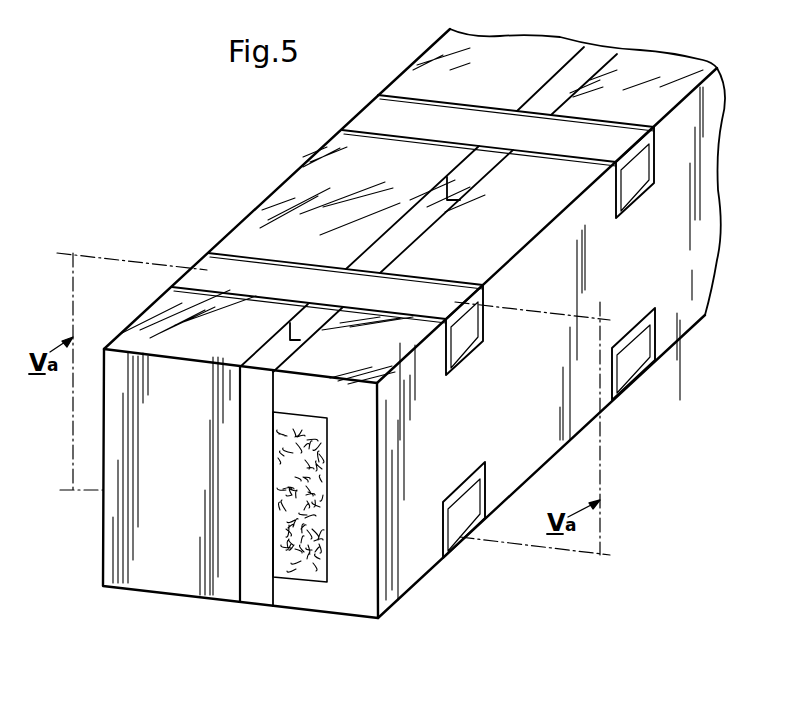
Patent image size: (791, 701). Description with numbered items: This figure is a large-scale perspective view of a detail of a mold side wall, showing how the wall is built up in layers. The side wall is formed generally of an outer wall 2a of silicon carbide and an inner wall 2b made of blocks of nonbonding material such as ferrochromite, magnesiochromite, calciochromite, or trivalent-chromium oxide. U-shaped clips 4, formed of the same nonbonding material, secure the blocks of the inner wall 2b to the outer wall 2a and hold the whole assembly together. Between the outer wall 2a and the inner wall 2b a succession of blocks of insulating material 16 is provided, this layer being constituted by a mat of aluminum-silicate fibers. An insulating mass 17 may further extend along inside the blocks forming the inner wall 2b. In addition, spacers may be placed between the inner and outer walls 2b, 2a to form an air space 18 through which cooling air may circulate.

The outer wall 2a is at (143, 581).
The inner wall 2b is at (350, 597).
The U-shaped clips 4 is at (630, 376).
The insulating material 16 is at (307, 322).
The insulating mass 17 is at (290, 557).
The air space 18 is at (236, 590).